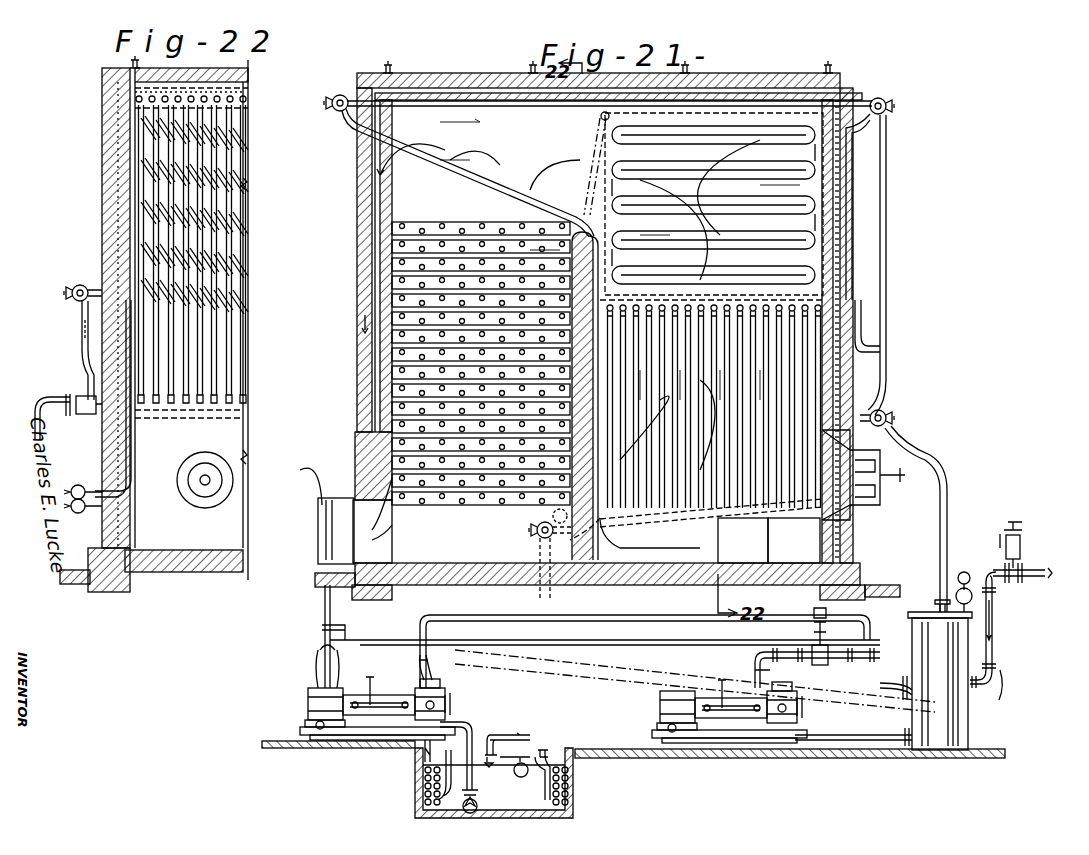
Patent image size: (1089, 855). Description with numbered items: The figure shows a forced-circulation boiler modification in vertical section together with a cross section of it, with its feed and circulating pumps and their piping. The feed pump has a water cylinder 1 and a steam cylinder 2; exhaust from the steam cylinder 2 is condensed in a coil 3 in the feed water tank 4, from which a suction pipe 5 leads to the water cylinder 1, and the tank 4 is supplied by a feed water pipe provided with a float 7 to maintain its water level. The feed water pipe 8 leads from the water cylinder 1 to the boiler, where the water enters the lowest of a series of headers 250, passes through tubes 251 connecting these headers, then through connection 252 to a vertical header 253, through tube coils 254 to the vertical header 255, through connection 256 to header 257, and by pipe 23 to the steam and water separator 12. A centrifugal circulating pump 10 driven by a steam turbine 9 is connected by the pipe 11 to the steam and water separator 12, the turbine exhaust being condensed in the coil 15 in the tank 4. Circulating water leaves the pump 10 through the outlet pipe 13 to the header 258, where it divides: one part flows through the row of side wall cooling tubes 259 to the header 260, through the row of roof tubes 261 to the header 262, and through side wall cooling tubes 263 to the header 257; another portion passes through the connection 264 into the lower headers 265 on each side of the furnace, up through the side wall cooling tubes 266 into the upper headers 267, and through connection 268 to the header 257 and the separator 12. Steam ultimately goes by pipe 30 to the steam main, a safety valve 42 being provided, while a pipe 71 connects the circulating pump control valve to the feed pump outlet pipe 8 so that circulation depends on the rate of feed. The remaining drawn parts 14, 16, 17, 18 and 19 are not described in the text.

In FIG. 21, the water cylinder 1 is at (315, 707).
In FIG. 21, the steam cylinder 2 is at (448, 706).
In FIG. 21, the coil 3 is at (420, 791).
In FIG. 21, the feed water tank 4 is at (572, 815).
In FIG. 21, the suction pipe 5 is at (461, 767).
In FIG. 21, the float 7 is at (513, 772).
In FIG. 21, the feed water pipe 8 is at (322, 599).
In FIG. 21, the steam turbine 9 is at (792, 709).
In FIG. 21, the centrifugal circulating pump 10 is at (660, 711).
In FIG. 21, the pipe 11 is at (858, 760).
In FIG. 21, the steam and water separator 12 is at (962, 729).
In FIG. 21, the outlet pipe 13 is at (622, 645).
In FIG. 21, the pipe 14 is at (697, 615).
In FIG. 21, the coil 15 is at (566, 785).
In FIG. 21, the tank level 16 is at (935, 711).
In FIG. 21, the pipe 17 is at (912, 709).
In FIG. 21, the valve 18 is at (832, 700).
In FIG. 21, the valve 19 is at (432, 669).
In FIG. 22, the pipe 23 is at (38, 402).
In FIG. 21, the pipe 23 is at (948, 501).
In FIG. 21, the pipe 30 is at (1042, 581).
In FIG. 21, the safety valve 42 is at (1022, 548).
In FIG. 21, the pipe 71 is at (558, 640).
In FIG. 21, the headers 250 is at (460, 470).
In FIG. 21, the tubes 251 is at (405, 390).
In FIG. 21, the connection 252 is at (594, 170).
In FIG. 21, the vertical header 253 is at (604, 120).
In FIG. 22, the tube coils 254 is at (244, 158).
In FIG. 21, the tube coils 254 is at (767, 138).
In FIG. 22, the vertical header 255 is at (102, 230).
In FIG. 21, the vertical header 255 is at (835, 269).
In FIG. 22, the connection 256 is at (82, 320).
In FIG. 21, the connection 256 is at (890, 233).
In FIG. 22, the header 257 is at (84, 414).
In FIG. 21, the header 257 is at (890, 411).
In FIG. 21, the header 258 is at (540, 540).
In FIG. 21, the side wall cooling tubes 259 is at (650, 537).
In FIG. 21, the header 260 is at (342, 94).
In FIG. 22, the roof tubes 261 is at (248, 88).
In FIG. 21, the roof tubes 261 is at (487, 110).
In FIG. 22, the header 262 is at (245, 102).
In FIG. 21, the header 262 is at (888, 114).
In FIG. 21, the side wall cooling tubes 263 is at (852, 221).
In FIG. 21, the connection 264 is at (552, 512).
In FIG. 22, the lower headers 265 is at (76, 512).
In FIG. 21, the lower headers 265 is at (662, 522).
In FIG. 22, the side wall cooling tubes 266 is at (128, 440).
In FIG. 21, the side wall cooling tubes 266 is at (790, 373).
In FIG. 22, the upper headers 267 is at (74, 286).
In FIG. 21, the upper headers 267 is at (872, 297).
In FIG. 22, the connection 268 is at (82, 352).